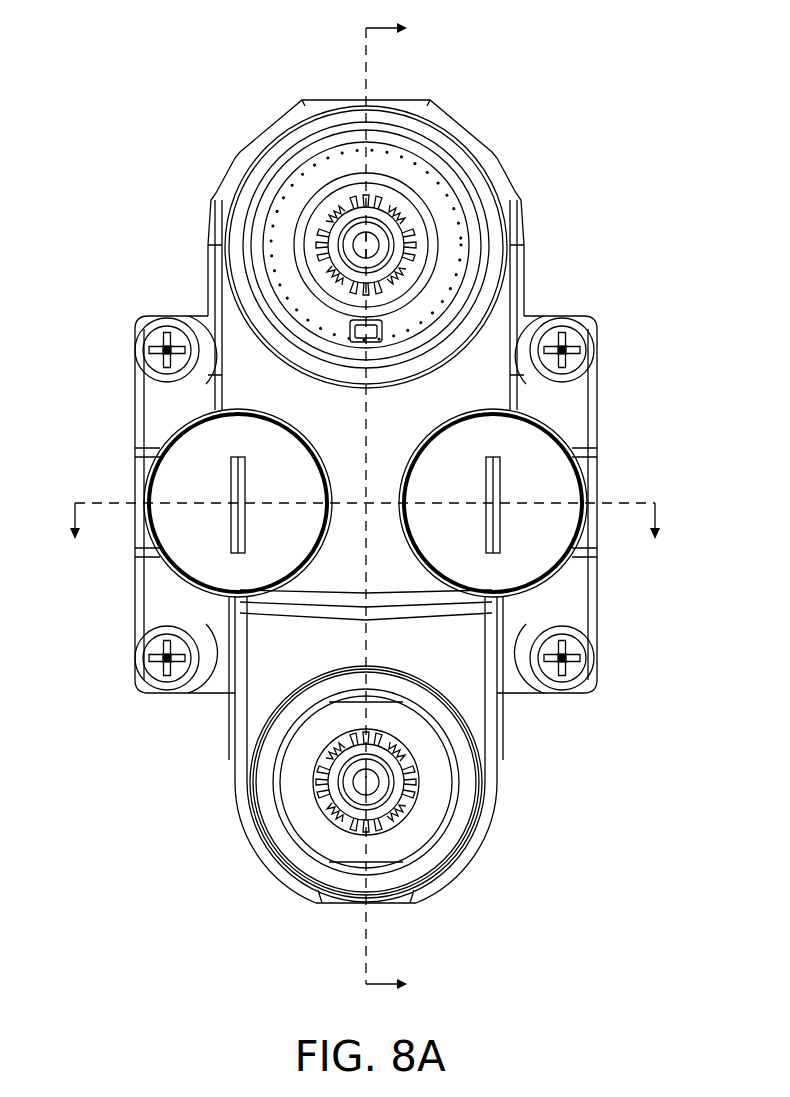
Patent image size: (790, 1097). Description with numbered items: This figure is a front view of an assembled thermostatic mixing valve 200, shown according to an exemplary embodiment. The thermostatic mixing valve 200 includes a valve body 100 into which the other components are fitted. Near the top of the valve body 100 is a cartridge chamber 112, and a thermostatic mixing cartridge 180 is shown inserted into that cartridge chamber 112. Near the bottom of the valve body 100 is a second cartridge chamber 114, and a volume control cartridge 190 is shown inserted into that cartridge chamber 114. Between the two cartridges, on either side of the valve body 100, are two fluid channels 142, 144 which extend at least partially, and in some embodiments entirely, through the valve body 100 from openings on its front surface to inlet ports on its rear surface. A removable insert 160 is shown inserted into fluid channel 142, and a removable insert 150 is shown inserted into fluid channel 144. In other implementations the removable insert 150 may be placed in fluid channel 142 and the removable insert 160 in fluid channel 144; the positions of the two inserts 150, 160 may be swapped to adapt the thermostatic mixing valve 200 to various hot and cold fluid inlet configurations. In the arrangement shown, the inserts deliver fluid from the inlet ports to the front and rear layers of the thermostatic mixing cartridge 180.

The thermostatic mixing valve 200 is at (78, 212).
The valve body 100 is at (190, 316).
The cartridge chamber 112 is at (487, 218).
The thermostatic mixing cartridge 180 is at (336, 168).
The fluid channel 142 is at (173, 433).
The removable insert 160 is at (187, 491).
The fluid channel 144 is at (567, 447).
The removable insert 150 is at (545, 480).
The cartridge chamber 114 is at (452, 833).
The volume control cartridge 190 is at (425, 772).